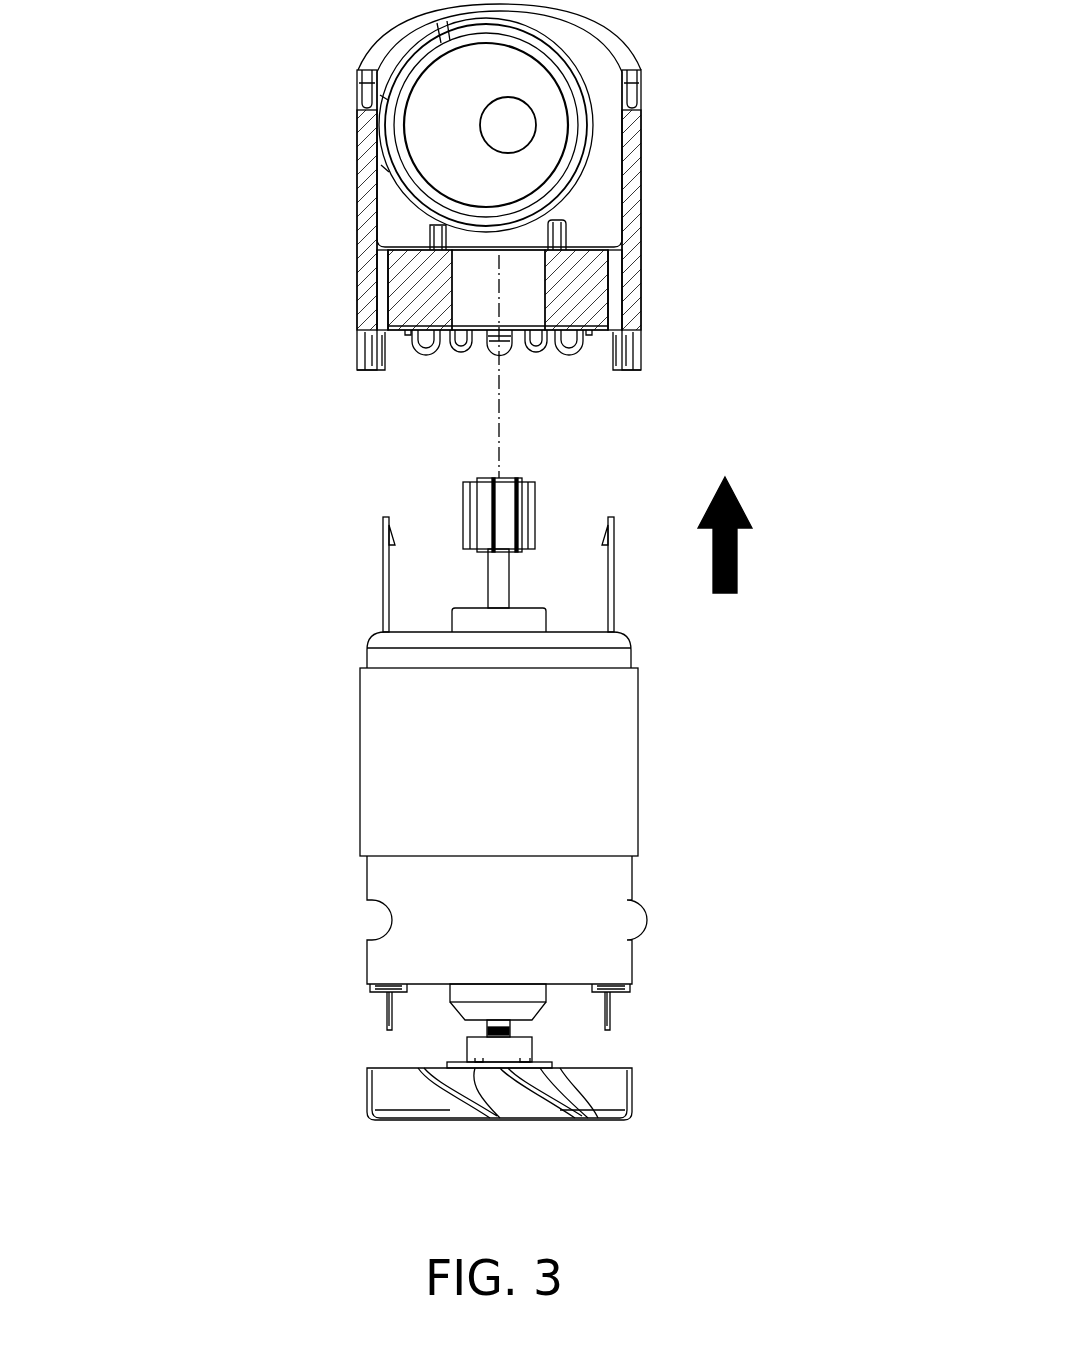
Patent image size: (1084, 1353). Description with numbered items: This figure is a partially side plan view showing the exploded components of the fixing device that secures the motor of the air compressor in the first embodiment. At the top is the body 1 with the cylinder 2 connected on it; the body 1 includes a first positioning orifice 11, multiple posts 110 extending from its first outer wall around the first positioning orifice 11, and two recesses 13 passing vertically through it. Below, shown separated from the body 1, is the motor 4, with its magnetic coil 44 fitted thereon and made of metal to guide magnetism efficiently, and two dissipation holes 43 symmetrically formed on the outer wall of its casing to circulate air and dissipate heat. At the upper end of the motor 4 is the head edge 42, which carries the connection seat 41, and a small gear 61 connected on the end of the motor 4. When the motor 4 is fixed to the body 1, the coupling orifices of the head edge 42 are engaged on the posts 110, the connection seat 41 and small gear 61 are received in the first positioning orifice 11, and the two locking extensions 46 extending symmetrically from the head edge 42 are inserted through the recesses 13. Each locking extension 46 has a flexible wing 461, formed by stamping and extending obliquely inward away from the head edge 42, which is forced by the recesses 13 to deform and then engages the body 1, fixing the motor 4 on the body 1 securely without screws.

The body 1 is at (578, 258).
The cylinder 2 is at (567, 93).
The first positioning orifice 11 is at (487, 291).
The recesses 13 is at (383, 312).
The posts 110 is at (452, 352).
The motor 4 is at (586, 940).
The connection seat 41 is at (500, 621).
The head edge 42 is at (420, 629).
The dissipation holes 43 is at (378, 920).
The magnetic coil 44 is at (382, 775).
The locking extensions 46 is at (385, 578).
The flexible wing 461 is at (384, 538).
The small gear 61 is at (485, 522).